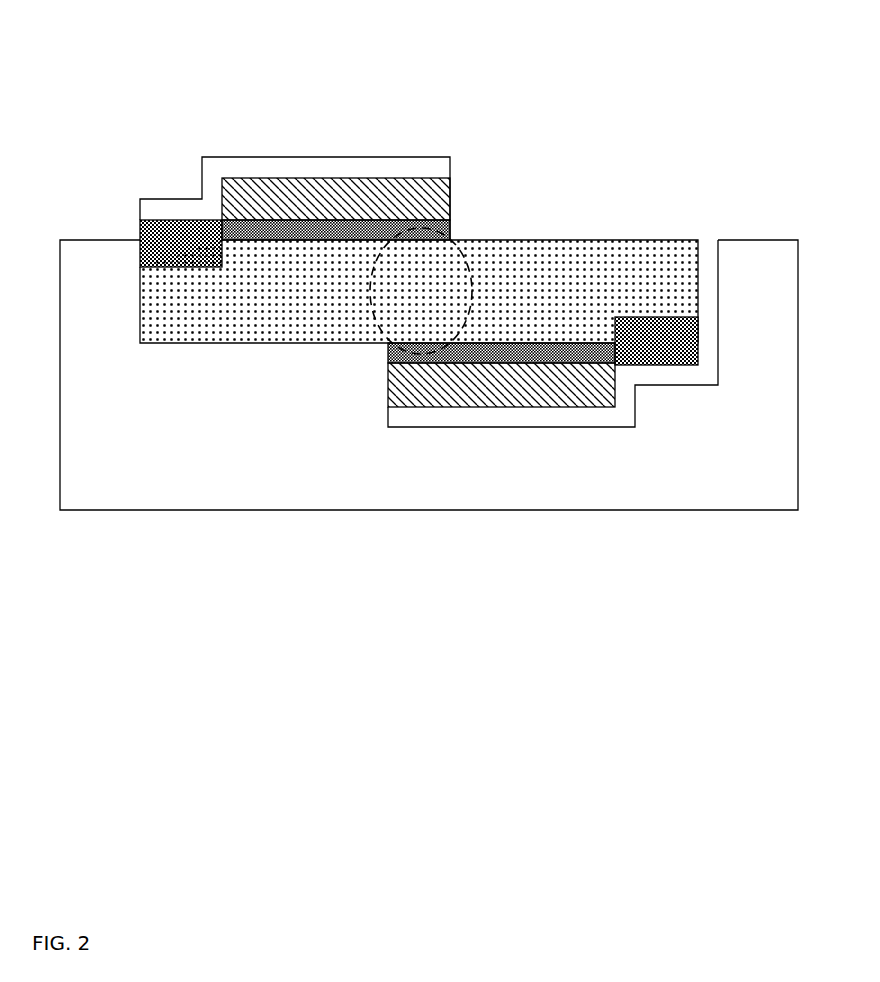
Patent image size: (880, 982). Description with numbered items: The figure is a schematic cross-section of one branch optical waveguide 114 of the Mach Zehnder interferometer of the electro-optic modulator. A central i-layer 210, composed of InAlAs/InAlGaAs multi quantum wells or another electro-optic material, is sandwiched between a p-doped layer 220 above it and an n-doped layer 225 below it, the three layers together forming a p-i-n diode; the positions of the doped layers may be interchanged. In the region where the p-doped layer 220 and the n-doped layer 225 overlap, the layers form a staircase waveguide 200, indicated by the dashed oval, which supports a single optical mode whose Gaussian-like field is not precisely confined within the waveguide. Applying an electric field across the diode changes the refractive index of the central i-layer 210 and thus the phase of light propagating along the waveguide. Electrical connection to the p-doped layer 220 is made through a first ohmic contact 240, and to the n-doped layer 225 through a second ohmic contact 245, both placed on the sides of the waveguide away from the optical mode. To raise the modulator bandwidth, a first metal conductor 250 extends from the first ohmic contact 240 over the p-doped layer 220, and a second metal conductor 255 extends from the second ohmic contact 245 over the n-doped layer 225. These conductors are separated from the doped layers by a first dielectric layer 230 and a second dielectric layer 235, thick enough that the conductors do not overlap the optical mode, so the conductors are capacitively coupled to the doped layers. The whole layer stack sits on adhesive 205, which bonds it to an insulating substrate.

The branch optical waveguide 114 is at (189, 82).
The staircase waveguide 200 is at (375, 322).
The adhesive 205 is at (698, 511).
The central i-layer 210 is at (264, 303).
The p-doped layer 220 is at (450, 227).
The n-doped layer 225 is at (520, 350).
The first dielectric layer 230 is at (350, 210).
The second dielectric layer 235 is at (519, 393).
The first ohmic contact 240 is at (177, 232).
The second ohmic contact 245 is at (657, 333).
The first metal conductor 250 is at (450, 157).
The second metal conductor 255 is at (709, 240).